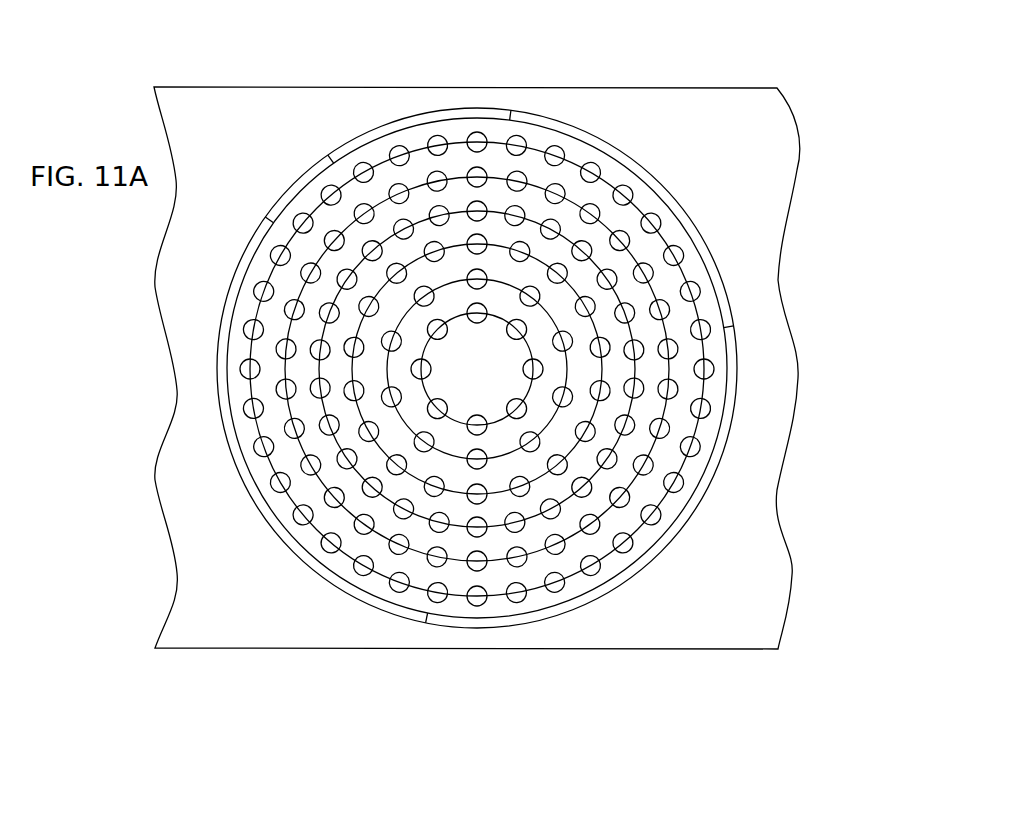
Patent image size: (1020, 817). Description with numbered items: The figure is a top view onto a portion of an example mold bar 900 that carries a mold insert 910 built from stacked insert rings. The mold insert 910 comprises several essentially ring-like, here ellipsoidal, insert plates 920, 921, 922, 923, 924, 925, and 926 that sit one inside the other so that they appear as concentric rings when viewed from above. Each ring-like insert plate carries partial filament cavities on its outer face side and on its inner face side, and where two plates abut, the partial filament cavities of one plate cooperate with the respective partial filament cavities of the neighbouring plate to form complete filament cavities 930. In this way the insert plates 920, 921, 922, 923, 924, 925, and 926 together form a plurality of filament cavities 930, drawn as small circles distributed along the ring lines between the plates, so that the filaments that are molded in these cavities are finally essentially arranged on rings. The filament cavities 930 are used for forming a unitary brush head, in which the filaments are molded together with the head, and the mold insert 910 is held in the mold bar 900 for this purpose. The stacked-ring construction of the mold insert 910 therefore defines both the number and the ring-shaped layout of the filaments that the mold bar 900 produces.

The mold bar 900 is at (668, 672).
The mold insert 910 is at (650, 145).
The insert plate 920 is at (377, 587).
The insert plate 921 is at (652, 493).
The insert plate 922 is at (640, 442).
The insert plate 923 is at (617, 403).
The insert plate 924 is at (582, 372).
The insert plate 925 is at (552, 370).
The insert plate 926 is at (483, 362).
The filament cavities 930 is at (352, 347).